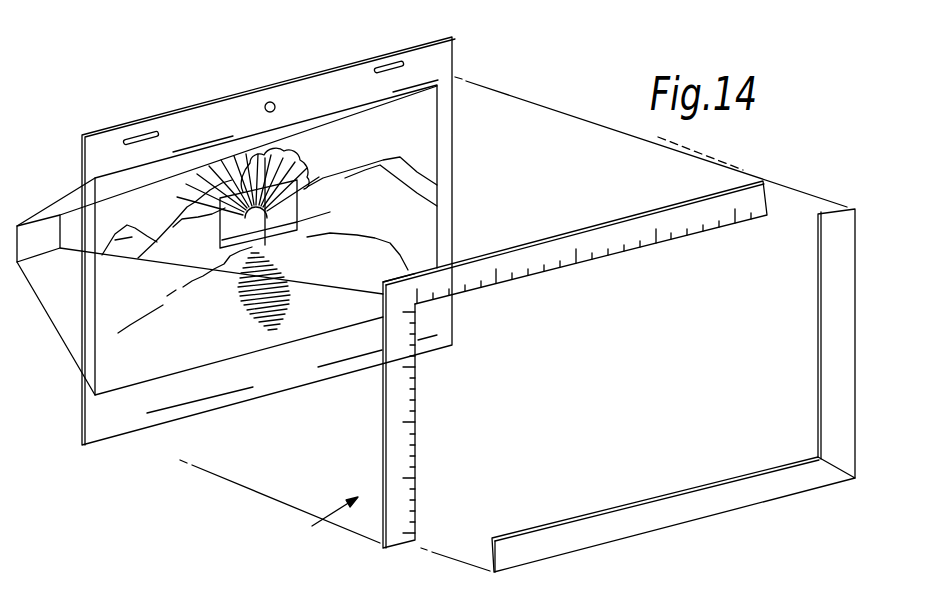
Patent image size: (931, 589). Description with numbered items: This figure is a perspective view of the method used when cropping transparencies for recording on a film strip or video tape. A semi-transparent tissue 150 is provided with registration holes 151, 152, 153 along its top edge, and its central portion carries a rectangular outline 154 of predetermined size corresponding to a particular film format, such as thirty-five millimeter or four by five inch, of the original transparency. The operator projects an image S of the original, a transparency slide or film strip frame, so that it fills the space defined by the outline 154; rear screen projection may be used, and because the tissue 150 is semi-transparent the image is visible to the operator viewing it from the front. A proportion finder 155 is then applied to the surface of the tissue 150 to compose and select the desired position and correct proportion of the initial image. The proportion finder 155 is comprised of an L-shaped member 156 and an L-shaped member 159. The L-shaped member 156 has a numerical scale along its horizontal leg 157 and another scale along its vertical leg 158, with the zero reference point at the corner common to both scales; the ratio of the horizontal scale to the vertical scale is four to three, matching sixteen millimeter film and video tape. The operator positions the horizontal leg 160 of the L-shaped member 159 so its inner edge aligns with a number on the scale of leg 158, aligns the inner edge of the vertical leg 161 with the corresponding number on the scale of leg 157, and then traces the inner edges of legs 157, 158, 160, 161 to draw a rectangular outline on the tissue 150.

The image S is at (22, 224).
The semi-transparent tissue 150 is at (453, 175).
The registration hole 151 is at (147, 132).
The registration hole 152 is at (272, 101).
The registration hole 153 is at (392, 62).
The rectangular outline 154 is at (437, 143).
The proportion finder 155 is at (310, 527).
The L-shaped member 156 is at (383, 440).
The horizontal leg 157 is at (621, 218).
The vertical leg 158 is at (383, 405).
The L-shaped member 159 is at (727, 512).
The horizontal leg 160 is at (644, 499).
The vertical leg 161 is at (856, 332).